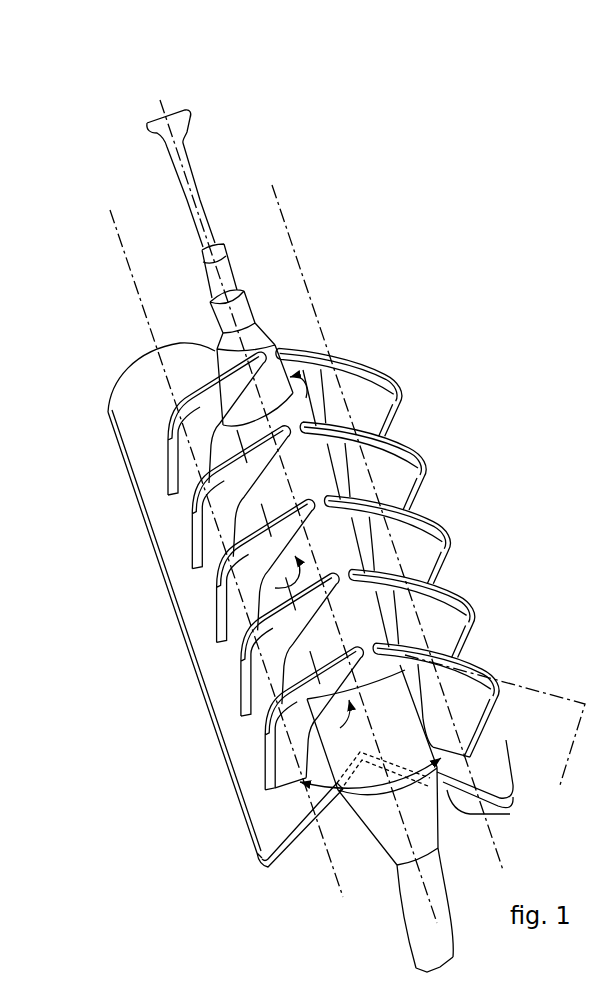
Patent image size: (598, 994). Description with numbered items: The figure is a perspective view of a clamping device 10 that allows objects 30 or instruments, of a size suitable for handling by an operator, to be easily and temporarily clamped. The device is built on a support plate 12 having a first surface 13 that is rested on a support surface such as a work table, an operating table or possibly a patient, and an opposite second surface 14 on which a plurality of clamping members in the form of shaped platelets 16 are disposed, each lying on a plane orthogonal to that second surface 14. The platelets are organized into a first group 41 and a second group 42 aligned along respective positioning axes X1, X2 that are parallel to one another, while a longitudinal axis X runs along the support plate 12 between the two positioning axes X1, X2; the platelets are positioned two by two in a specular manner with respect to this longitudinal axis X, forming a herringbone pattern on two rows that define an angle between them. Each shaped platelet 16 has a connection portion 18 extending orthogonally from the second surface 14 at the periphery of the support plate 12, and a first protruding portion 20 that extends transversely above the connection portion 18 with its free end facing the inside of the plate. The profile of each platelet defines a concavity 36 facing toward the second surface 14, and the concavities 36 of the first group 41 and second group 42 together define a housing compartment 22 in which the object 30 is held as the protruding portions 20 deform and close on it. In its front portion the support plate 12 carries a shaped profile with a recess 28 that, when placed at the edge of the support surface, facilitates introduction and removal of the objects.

The clamping device 10 is at (339, 274).
The support plate 12 is at (331, 630).
The first surface 13 is at (307, 860).
The second surface 14 is at (245, 758).
The shaped platelets 16 is at (314, 551).
The connection portion 18 is at (210, 540).
The first protruding portion 20 is at (230, 395).
The housing compartment 22 is at (214, 436).
The recess 28 is at (445, 787).
The object 30 is at (206, 309).
The concavity 36 is at (306, 398).
The first group 41 is at (163, 411).
The second group 42 is at (347, 348).
The longitudinal axis X is at (183, 170).
The positioning axis X1 is at (118, 235).
The positioning axis X2 is at (283, 212).